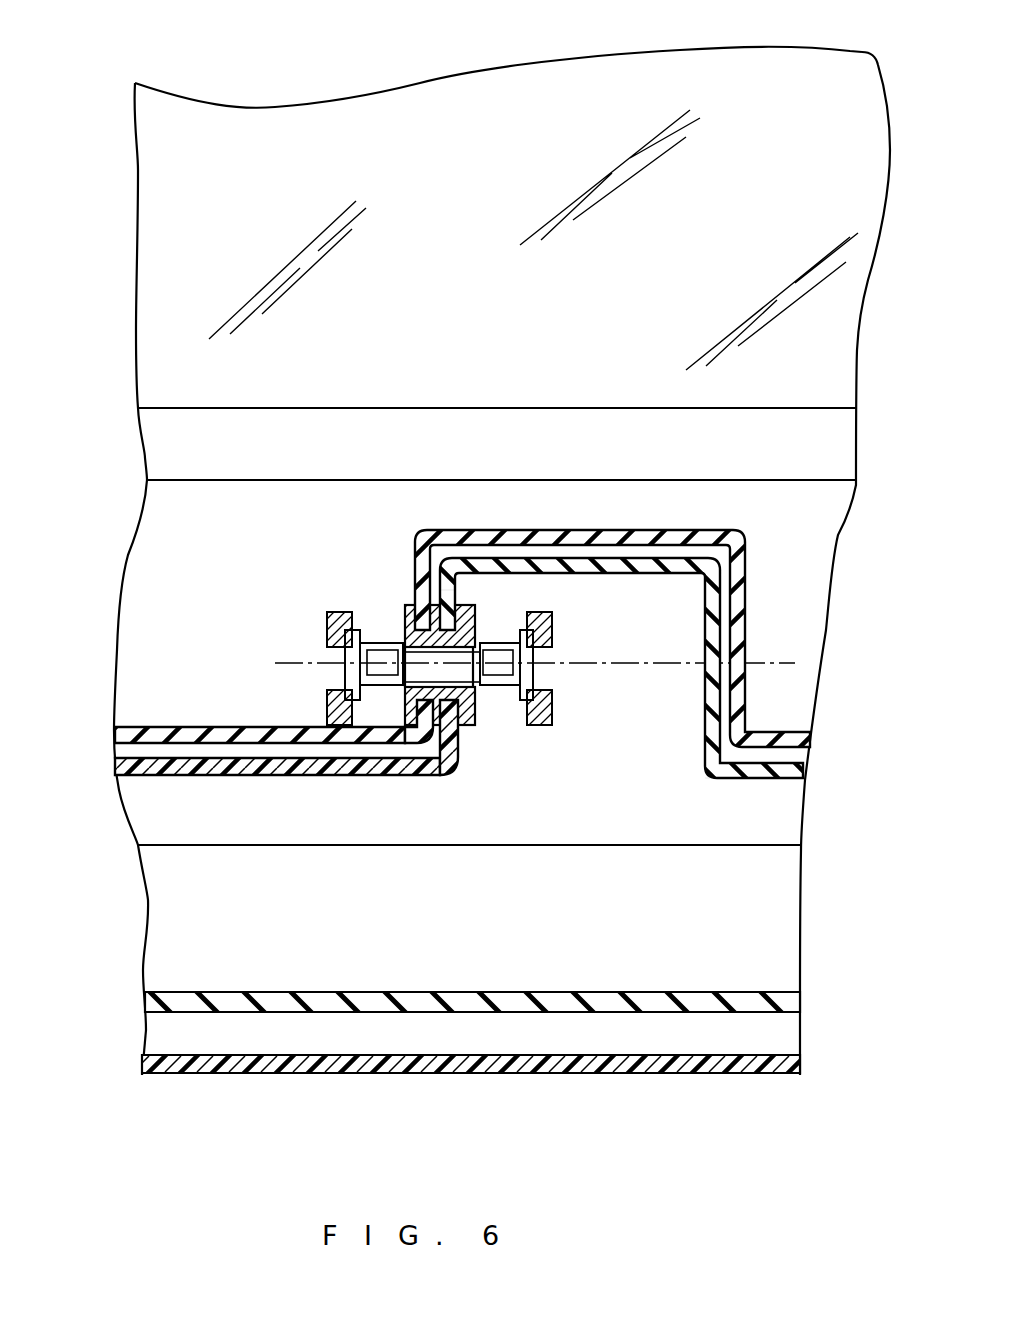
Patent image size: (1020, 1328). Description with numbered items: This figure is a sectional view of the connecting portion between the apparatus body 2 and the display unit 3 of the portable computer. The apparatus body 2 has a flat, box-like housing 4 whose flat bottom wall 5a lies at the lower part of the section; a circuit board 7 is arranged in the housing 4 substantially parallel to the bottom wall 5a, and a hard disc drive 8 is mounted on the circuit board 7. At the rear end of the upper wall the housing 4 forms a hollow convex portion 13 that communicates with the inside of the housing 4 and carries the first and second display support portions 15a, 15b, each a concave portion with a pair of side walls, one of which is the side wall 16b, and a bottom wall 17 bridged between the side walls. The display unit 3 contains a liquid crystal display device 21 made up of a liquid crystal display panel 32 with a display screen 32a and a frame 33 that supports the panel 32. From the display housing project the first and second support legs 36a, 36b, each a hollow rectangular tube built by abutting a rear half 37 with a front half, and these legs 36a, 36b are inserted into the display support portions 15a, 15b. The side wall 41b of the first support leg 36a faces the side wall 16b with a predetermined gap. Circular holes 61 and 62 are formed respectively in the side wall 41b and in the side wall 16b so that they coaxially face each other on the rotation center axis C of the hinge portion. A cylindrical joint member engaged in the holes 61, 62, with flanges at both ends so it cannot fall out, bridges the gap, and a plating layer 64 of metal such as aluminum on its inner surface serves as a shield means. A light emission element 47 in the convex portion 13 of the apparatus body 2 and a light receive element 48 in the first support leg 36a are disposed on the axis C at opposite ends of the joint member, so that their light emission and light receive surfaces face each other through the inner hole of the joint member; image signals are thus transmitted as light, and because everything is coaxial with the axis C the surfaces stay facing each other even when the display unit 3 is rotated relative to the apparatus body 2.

The liquid crystal display panel 32 is at (388, 115).
The display screen 32a is at (778, 214).
The liquid crystal display device 21 is at (830, 365).
The frame 33 is at (826, 452).
The second support leg 36b is at (812, 550).
The display unit 3 is at (143, 460).
The first support leg 36a is at (299, 691).
The side wall 41b is at (458, 598).
The circular hole 61 is at (405, 643).
The circular hole 62 is at (488, 656).
The rotation center axis C is at (800, 650).
The light receive element 48 is at (352, 676).
The plating layer 64 is at (420, 673).
The light emission element 47 is at (530, 675).
The convex portion 13 is at (688, 700).
The side wall 16b is at (447, 740).
The bottom wall 17 is at (165, 770).
The rear half 37 is at (295, 718).
The first display support portion 15a is at (338, 760).
The second display support portion 15b is at (790, 777).
The hard disc drive 8 is at (778, 893).
The housing 4 is at (145, 906).
The circuit board 7 is at (755, 998).
The apparatus body 2 is at (132, 1065).
The bottom wall 5a is at (312, 1078).